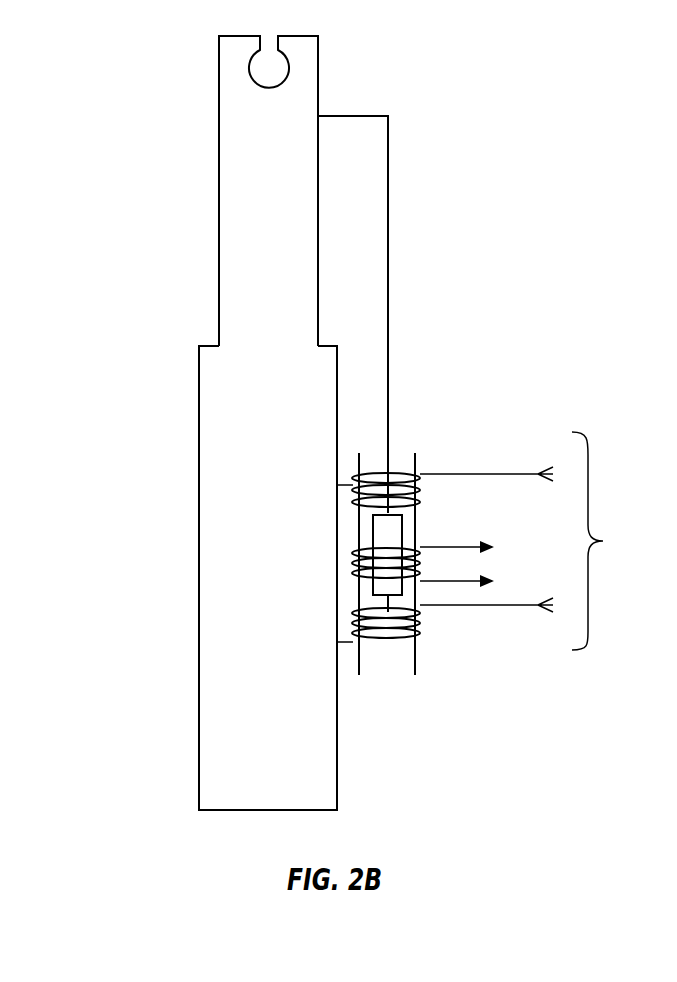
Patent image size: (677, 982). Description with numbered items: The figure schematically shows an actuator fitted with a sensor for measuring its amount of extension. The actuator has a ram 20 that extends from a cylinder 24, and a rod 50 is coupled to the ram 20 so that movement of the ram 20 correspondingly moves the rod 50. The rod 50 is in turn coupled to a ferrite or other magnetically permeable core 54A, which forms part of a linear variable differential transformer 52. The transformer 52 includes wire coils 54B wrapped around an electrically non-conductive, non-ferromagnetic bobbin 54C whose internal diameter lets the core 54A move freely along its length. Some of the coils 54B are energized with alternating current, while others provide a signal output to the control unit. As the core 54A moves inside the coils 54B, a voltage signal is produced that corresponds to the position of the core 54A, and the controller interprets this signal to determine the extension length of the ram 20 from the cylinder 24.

The ram 20 is at (219, 232).
The cylinder 24 is at (199, 410).
The rod 50 is at (388, 273).
The linear variable differential transformer 52 is at (487, 585).
The core 54A is at (387, 618).
The wire coils 54B is at (422, 633).
The bobbin 54C is at (418, 594).